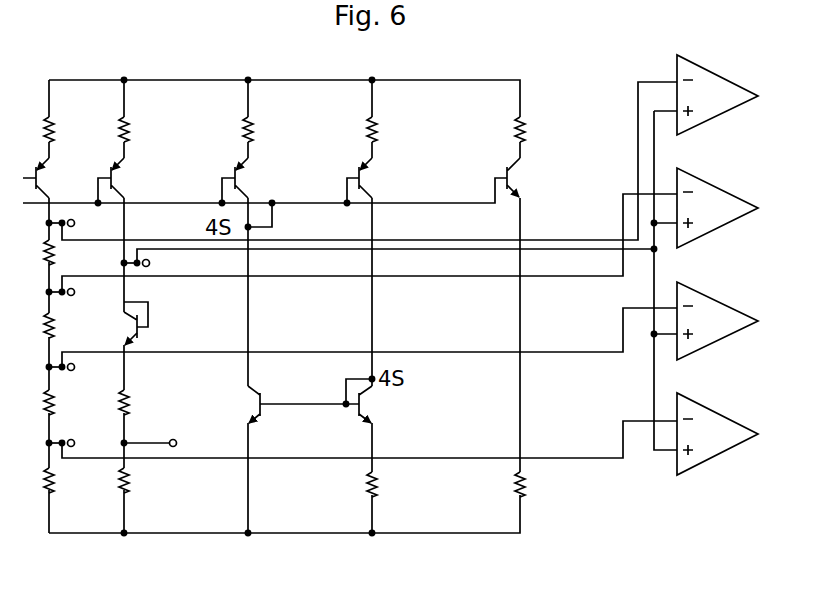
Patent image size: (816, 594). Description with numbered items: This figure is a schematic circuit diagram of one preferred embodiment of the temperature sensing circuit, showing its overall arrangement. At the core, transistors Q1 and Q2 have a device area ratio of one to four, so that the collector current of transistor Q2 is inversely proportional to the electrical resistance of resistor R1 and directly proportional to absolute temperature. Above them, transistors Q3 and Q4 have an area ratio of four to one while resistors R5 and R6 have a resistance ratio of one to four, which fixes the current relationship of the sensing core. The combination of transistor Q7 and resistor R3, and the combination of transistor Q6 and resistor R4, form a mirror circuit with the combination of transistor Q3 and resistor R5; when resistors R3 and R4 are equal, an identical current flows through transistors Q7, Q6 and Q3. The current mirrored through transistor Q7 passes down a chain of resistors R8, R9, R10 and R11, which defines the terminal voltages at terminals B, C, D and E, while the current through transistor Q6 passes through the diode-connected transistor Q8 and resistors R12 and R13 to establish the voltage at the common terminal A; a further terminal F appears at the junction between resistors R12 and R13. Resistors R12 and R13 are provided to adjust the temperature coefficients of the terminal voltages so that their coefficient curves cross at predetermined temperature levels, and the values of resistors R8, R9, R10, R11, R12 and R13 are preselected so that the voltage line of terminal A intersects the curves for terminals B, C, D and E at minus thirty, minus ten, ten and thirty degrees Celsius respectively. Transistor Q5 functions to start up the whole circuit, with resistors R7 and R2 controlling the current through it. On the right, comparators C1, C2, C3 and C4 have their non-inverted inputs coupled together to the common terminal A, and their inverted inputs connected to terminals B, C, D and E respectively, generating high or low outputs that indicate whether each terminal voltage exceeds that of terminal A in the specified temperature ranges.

The resistor R1 is at (387, 484).
The resistor R2 is at (535, 484).
The resistor R3 is at (64, 131).
The resistor R4 is at (139, 131).
The resistor R5 is at (263, 119).
The resistor R6 is at (388, 119).
The resistor R7 is at (535, 131).
The resistor R8 is at (64, 253).
The resistor R9 is at (64, 326).
The resistor R10 is at (71, 402).
The resistor R11 is at (71, 480).
The resistor R12 is at (146, 402).
The resistor R13 is at (146, 480).
The transistor Q1 is at (241, 404).
The transistor Q2 is at (383, 404).
The transistor Q3 is at (251, 180).
The transistor Q4 is at (375, 180).
The transistor Q5 is at (529, 177).
The transistor Q6 is at (126, 180).
The transistor Q7 is at (51, 178).
The transistor Q8 is at (124, 323).
The comparator C1 is at (717, 95).
The comparator C2 is at (717, 208).
The comparator C3 is at (717, 321).
The comparator C4 is at (717, 434).
The common terminal A is at (144, 264).
The terminal B is at (69, 224).
The terminal C is at (69, 293).
The terminal D is at (70, 368).
The terminal E is at (68, 444).
The terminal F is at (156, 444).